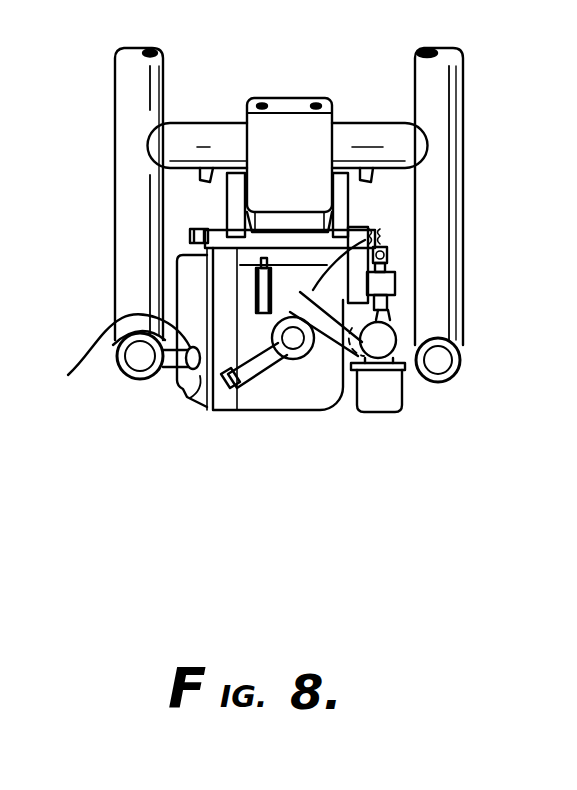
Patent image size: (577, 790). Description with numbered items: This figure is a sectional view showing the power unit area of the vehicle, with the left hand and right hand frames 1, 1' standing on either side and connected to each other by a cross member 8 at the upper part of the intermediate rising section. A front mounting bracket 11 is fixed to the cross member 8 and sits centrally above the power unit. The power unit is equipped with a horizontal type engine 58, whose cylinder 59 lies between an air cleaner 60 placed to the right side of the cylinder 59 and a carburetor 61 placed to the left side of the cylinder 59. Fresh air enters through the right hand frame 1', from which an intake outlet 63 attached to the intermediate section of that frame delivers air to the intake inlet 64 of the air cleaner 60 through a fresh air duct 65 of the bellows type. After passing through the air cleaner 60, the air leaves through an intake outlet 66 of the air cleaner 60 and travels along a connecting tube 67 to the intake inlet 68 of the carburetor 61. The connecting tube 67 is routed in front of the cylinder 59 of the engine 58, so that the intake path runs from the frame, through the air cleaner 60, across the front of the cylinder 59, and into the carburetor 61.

The left hand frame 1 is at (484, 215).
The right hand frame 1' is at (109, 213).
The cross member 8 is at (383, 122).
The front mounting bracket 11 is at (263, 148).
The horizontal type engine 58 is at (315, 409).
The cylinder 59 is at (278, 398).
The air cleaner 60 is at (183, 398).
The carburetor 61 is at (402, 388).
The intake outlet 63 is at (167, 372).
The intake inlet 64 is at (113, 326).
The fresh air duct 65 is at (115, 357).
The intake outlet 66 is at (243, 258).
The connecting tube 67 is at (365, 240).
The intake inlet 68 is at (393, 314).